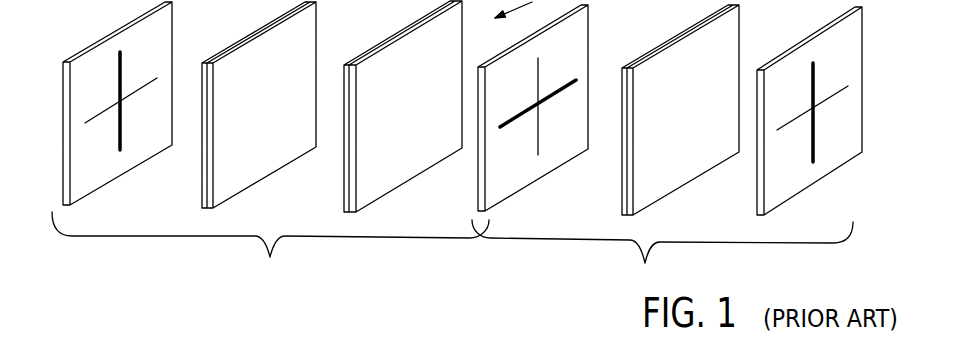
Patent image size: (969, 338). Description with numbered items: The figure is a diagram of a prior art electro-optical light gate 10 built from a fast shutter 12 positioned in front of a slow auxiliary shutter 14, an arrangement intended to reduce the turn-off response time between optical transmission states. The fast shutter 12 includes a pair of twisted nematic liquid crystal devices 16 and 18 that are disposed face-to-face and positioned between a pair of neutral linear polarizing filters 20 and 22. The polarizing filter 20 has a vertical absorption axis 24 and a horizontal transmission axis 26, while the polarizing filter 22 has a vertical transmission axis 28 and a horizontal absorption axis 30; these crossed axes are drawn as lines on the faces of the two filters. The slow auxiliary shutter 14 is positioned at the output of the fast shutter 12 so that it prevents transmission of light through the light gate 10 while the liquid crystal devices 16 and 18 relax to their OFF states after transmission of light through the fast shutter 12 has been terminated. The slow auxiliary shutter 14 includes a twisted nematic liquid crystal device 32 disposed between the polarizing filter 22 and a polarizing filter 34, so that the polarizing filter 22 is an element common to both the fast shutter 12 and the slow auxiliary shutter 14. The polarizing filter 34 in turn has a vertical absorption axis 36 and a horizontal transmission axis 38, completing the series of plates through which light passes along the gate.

The light gate 10 is at (524, 9).
The fast shutter 12 is at (352, 248).
The slow auxiliary shutter 14 is at (500, 257).
The twisted nematic liquid crystal device 16 is at (233, 45).
The twisted nematic liquid crystal device 18 is at (375, 45).
The neutral linear polarizing filter 20 is at (83, 45).
The neutral linear polarizing filter 22 is at (590, 50).
The vertical absorption axis 24 is at (122, 77).
The horizontal transmission axis 26 is at (97, 122).
The vertical transmission axis 28 is at (540, 82).
The horizontal absorption axis 30 is at (513, 125).
The twisted nematic liquid crystal device 32 is at (672, 37).
The polarizing filter 34 is at (800, 43).
The vertical absorption axis 36 is at (818, 85).
The horizontal transmission axis 38 is at (788, 128).